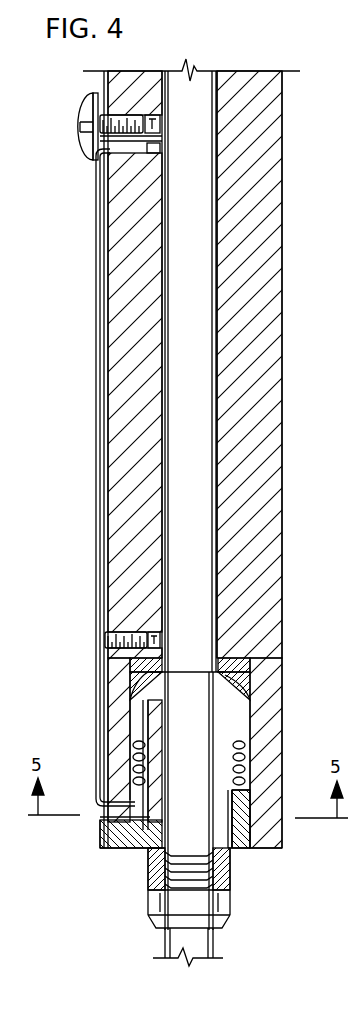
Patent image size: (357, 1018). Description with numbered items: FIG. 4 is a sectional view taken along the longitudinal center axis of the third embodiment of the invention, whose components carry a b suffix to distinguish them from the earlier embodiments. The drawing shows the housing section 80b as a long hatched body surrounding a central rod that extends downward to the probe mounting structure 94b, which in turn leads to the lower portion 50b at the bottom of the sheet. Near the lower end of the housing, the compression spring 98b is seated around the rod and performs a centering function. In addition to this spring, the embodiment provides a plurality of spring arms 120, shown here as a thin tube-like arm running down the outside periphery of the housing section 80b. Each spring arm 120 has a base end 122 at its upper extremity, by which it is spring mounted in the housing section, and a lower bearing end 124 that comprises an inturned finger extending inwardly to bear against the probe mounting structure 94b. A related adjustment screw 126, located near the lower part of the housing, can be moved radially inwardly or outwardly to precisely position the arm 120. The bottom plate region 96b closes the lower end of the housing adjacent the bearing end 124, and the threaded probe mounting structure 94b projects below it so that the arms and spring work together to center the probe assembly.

The base end 122 is at (112, 158).
The spring arm 120 is at (96, 220).
The housing section 80b is at (112, 276).
The adjustment screw 126 is at (125, 632).
The compression spring 98b is at (135, 763).
The lower bearing end 124 is at (100, 830).
The housing bottom 96b is at (95, 846).
The probe mounting structure 94b is at (150, 868).
The stem 50b is at (165, 938).